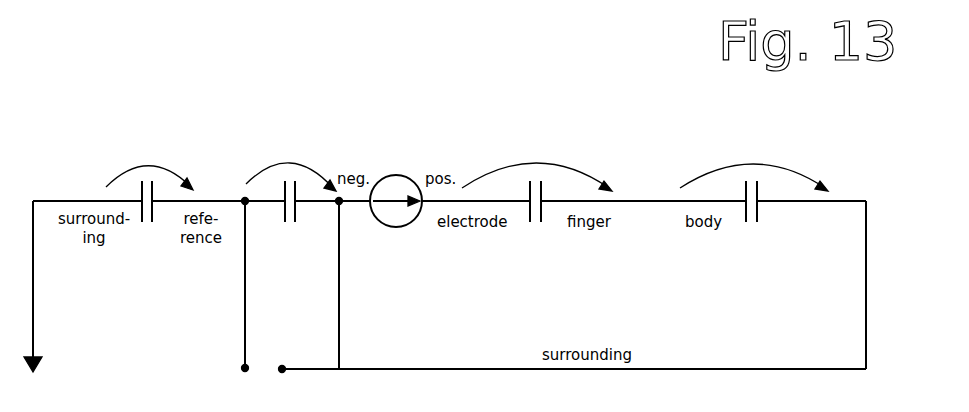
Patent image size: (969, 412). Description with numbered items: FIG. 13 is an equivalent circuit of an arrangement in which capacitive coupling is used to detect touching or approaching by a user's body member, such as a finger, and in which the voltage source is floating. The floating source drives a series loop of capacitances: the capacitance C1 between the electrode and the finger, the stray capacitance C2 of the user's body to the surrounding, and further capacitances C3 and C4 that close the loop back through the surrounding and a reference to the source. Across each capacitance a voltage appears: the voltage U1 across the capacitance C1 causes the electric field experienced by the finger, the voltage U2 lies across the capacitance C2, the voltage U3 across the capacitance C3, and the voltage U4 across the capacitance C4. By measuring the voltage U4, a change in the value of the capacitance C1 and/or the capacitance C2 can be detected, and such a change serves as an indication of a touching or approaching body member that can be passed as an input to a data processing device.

The capacitance between the finger and the electrode C1 is at (537, 228).
The stray capacitance of the user C2 is at (753, 228).
The capacitance between surrounding and reference C3 is at (150, 226).
The capacitance between reference and current source negative terminal C4 is at (292, 226).
The voltage across the finger-electrode capacitance U1 is at (537, 163).
The voltage across C2 U2 is at (754, 163).
The voltage across C3 U3 is at (149, 162).
The measured voltage U4 is at (291, 162).